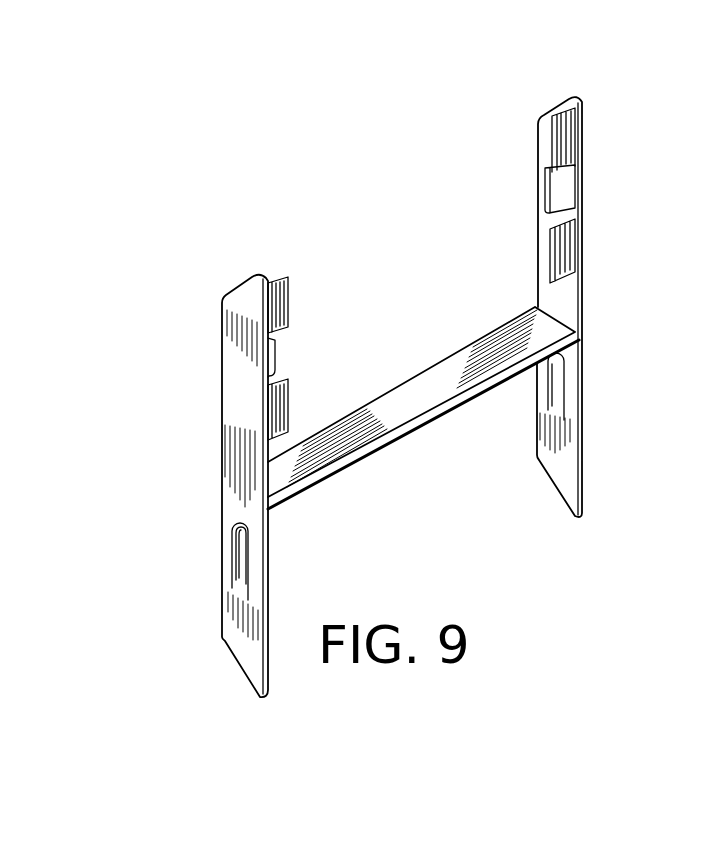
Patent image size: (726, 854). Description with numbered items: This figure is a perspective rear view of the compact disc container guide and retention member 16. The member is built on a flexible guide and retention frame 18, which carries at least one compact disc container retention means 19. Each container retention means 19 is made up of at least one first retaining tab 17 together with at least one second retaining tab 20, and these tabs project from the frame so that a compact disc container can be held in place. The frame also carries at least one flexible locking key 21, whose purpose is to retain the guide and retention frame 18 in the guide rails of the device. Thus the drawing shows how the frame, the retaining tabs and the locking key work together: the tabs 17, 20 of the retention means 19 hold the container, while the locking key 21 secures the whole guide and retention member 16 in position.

The guide and retention member 16 is at (465, 320).
The first retaining tab 17 is at (272, 357).
The flexible guide and retention frame 18 is at (440, 426).
The compact disc container retention means 19 is at (276, 263).
The second retaining tab 20 is at (284, 303).
The flexible locking key 21 is at (233, 545).